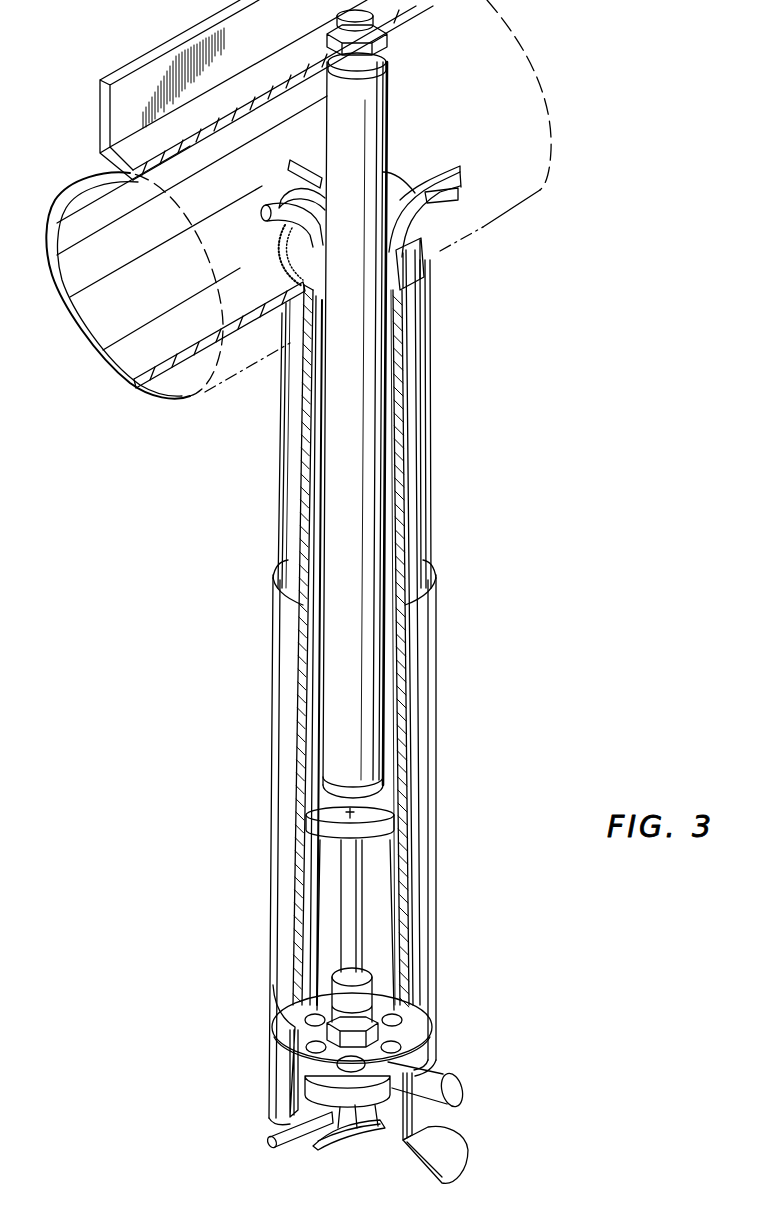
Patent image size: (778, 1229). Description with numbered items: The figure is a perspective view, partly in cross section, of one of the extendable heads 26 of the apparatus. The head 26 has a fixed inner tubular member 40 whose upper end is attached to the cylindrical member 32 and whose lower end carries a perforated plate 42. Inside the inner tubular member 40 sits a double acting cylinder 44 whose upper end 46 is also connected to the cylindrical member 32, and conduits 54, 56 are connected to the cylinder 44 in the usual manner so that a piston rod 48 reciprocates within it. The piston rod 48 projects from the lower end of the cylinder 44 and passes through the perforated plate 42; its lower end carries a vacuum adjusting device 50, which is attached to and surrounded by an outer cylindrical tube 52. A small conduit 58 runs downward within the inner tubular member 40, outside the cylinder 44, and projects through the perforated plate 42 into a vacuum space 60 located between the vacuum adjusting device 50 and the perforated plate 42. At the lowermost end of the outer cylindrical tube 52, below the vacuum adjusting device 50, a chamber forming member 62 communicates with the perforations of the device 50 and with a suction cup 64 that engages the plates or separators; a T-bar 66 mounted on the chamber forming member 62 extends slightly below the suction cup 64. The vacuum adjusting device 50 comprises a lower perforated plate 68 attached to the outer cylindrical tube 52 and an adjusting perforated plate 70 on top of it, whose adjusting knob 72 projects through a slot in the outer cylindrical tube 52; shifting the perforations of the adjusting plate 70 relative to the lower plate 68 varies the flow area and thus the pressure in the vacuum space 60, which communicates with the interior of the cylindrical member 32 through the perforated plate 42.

The head 26 is at (448, 657).
The cylindrical member 32 is at (75, 323).
The fixed inner tubular member 40 is at (291, 463).
The perforated plate 42 is at (320, 828).
The double acting cylinder 44 is at (367, 433).
The upper end of the cylinder 46 is at (370, 88).
The piston rod 48 is at (357, 925).
The vacuum adjusting device 50 is at (387, 1007).
The outer cylindrical tube 52 is at (428, 948).
The conduit 54 is at (290, 167).
The conduit 56 is at (268, 224).
The small conduit 58 is at (447, 167).
The vacuum space 60 is at (387, 893).
The chamber forming member 62 is at (423, 1112).
The suction cup 64 is at (457, 1158).
The T-bar 66 is at (298, 1140).
The lower perforated plate 68 is at (308, 1093).
The adjusting perforated plate 70 is at (312, 1033).
The adjusting knob 72 is at (452, 1075).